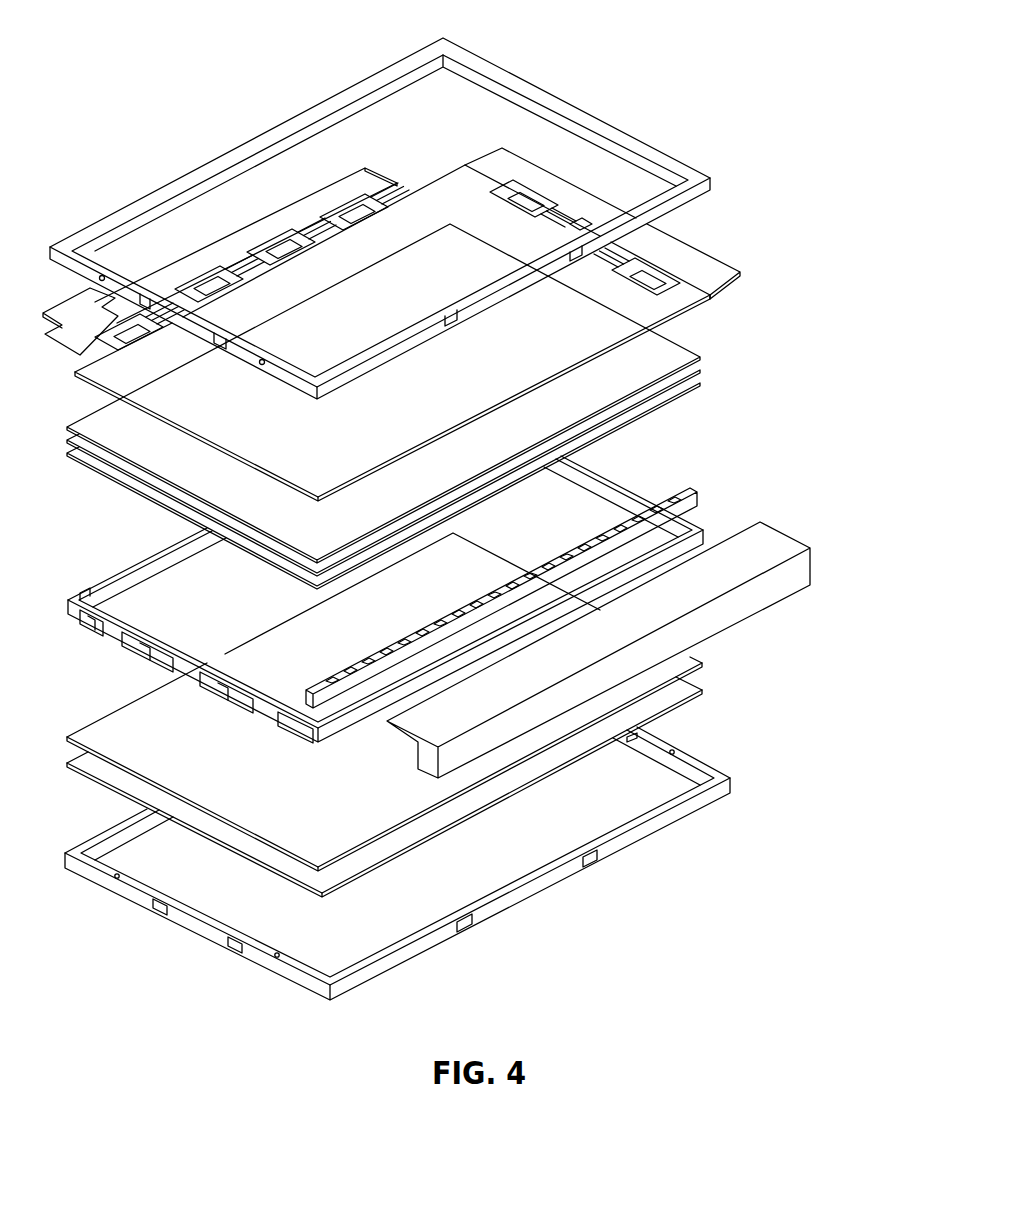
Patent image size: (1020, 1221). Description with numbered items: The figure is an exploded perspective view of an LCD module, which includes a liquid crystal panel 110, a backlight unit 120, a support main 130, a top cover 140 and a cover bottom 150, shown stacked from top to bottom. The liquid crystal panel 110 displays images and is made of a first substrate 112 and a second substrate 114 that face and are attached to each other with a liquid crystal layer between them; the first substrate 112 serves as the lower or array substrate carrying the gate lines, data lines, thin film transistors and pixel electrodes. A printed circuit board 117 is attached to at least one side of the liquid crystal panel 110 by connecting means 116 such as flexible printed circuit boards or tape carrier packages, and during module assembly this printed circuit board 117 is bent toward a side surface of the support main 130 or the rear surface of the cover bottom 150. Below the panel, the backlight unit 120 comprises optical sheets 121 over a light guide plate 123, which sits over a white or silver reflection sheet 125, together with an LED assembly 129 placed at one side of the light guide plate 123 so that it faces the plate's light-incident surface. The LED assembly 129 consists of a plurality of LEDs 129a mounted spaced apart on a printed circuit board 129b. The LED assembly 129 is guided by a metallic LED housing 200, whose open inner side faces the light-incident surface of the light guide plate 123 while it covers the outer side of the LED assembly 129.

The liquid crystal panel 110 is at (437, 311).
The first substrate 112 is at (736, 278).
The second substrate 114 is at (657, 307).
The connecting means 116 is at (484, 192).
The printed circuit board 117 is at (327, 200).
The backlight unit 120 is at (486, 560).
The optical sheets 121 is at (706, 353).
The light guide plate 123 is at (703, 665).
The reflection sheet 125 is at (703, 690).
The LED assembly 129 is at (538, 564).
The LEDs 129a is at (679, 494).
The printed circuit board 129b is at (699, 498).
The support main 130 is at (124, 613).
The top cover 140 is at (700, 168).
The cover bottom 150 is at (543, 884).
The LED housing 200 is at (802, 700).